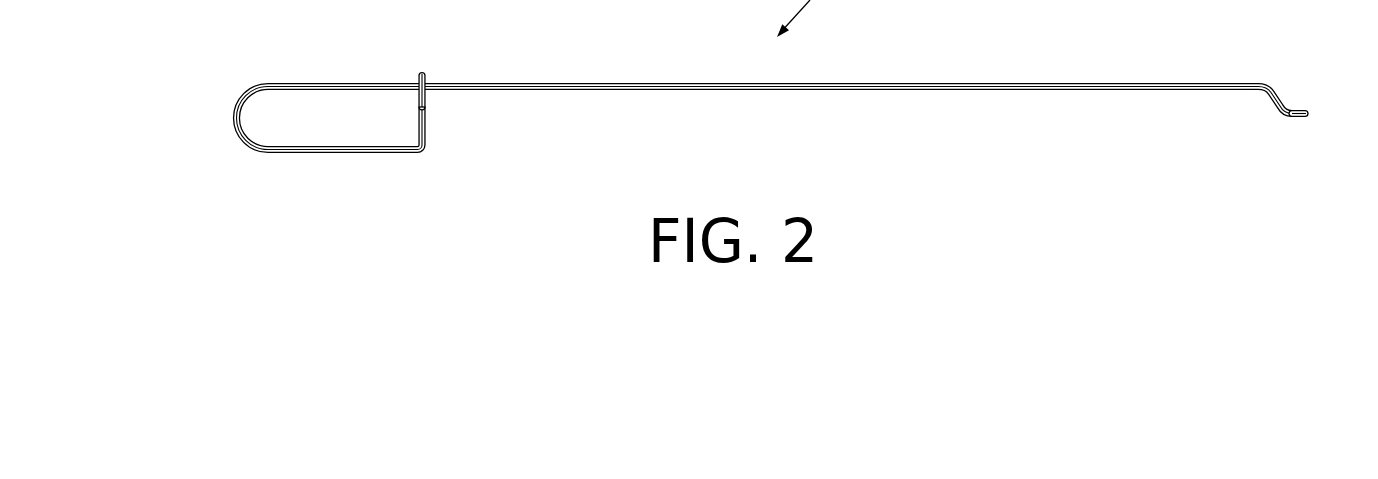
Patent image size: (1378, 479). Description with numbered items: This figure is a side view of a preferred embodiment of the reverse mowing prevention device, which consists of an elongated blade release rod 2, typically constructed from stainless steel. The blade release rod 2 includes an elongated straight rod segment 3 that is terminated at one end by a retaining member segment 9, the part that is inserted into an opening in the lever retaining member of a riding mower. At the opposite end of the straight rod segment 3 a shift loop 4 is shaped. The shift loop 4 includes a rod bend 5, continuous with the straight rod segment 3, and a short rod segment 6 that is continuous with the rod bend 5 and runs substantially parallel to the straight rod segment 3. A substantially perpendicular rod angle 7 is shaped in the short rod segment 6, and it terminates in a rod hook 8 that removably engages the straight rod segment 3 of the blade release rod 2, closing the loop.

The blade release rod 2 is at (931, 76).
The straight rod segment 3 is at (1140, 82).
The shift loop 4 is at (312, 123).
The rod bend 5 is at (243, 92).
The short rod segment 6 is at (327, 153).
The rod angle 7 is at (423, 150).
The rod hook 8 is at (427, 70).
The retaining member segment 9 is at (1295, 110).